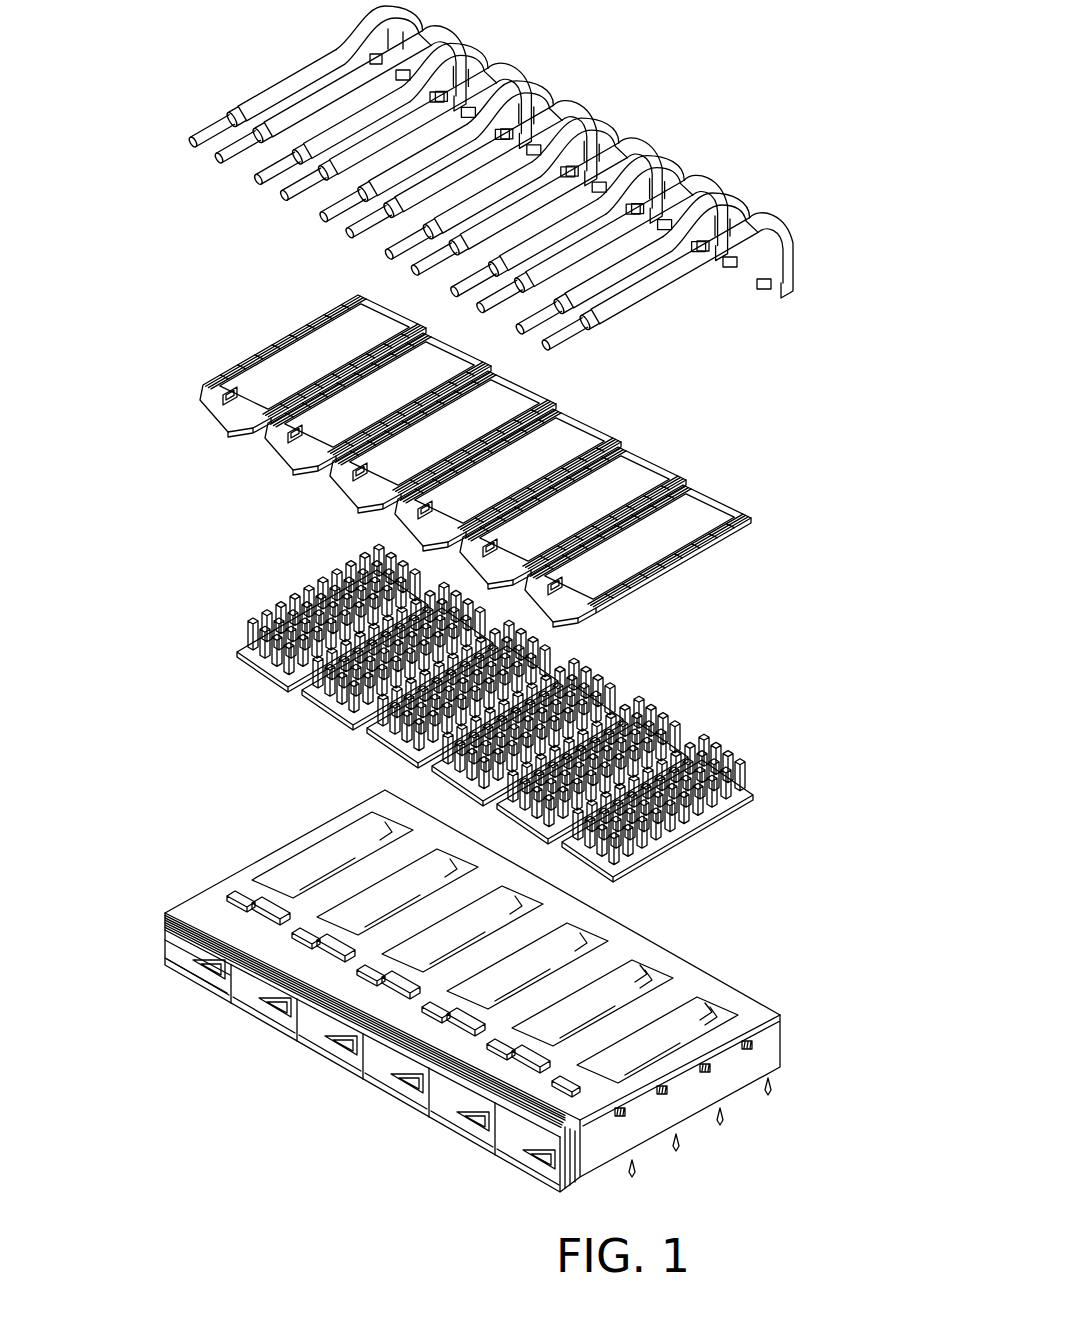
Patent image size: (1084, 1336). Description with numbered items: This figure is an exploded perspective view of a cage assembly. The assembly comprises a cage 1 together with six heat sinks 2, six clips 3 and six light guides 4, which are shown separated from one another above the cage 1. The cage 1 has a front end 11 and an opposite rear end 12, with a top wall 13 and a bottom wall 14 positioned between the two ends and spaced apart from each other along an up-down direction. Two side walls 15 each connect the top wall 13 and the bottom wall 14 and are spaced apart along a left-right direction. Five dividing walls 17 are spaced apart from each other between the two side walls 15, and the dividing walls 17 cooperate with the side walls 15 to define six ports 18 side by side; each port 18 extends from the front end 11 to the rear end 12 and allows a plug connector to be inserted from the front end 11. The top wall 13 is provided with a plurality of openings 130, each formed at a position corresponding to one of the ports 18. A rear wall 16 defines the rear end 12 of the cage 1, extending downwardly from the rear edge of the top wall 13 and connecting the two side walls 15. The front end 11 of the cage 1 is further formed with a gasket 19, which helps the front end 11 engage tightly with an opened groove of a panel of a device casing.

The cage 1 is at (467, 995).
The heat sink 2 is at (683, 693).
The clip 3 is at (672, 433).
The light guide 4 is at (702, 158).
The front end 11 is at (345, 1078).
The rear end 12 is at (645, 913).
The top wall 13 is at (305, 840).
The bottom wall 14 is at (183, 963).
The side wall 15 is at (175, 935).
The rear wall 16 is at (718, 1018).
The dividing wall 17 is at (400, 1105).
The port 18 is at (440, 1115).
The gasket 19 is at (217, 992).
The opening 130 is at (692, 1013).